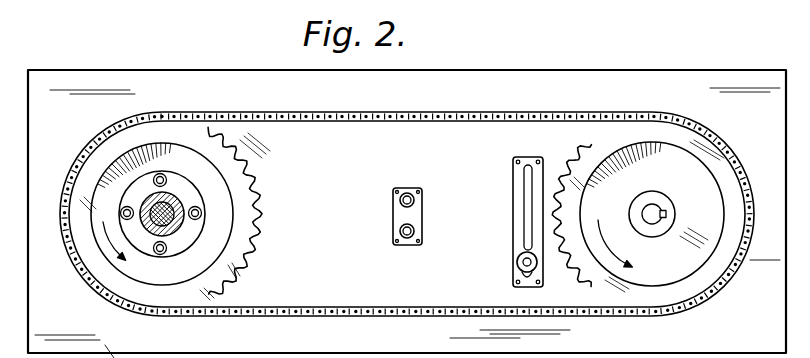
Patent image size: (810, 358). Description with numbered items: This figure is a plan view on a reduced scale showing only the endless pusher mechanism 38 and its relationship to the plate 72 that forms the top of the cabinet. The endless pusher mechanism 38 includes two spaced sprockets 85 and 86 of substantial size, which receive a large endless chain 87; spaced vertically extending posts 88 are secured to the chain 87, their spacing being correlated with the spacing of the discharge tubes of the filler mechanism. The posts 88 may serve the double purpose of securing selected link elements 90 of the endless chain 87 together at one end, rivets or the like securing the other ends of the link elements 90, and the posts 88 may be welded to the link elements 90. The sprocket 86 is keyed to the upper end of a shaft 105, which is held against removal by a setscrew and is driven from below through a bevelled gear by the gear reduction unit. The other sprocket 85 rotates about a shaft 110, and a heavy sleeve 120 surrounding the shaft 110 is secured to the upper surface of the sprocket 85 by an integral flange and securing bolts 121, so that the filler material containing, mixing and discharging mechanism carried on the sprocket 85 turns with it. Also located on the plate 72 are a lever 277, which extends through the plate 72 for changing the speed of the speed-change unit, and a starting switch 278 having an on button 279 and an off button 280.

The endless pusher mechanism 38 is at (403, 192).
The plate 72 is at (661, 86).
The sprocket 85 is at (190, 213).
The sprocket 86 is at (630, 212).
The endless chain 87 is at (473, 117).
The posts 88 is at (453, 117).
The link elements 90 is at (745, 172).
The shaft 105 is at (655, 212).
The shaft 110 is at (172, 204).
The sleeve 120 is at (184, 226).
The securing bolts 121 is at (163, 174).
The lever 277 is at (517, 262).
The starting switch 278 is at (440, 219).
The on button 279 is at (407, 194).
The off button 280 is at (407, 243).